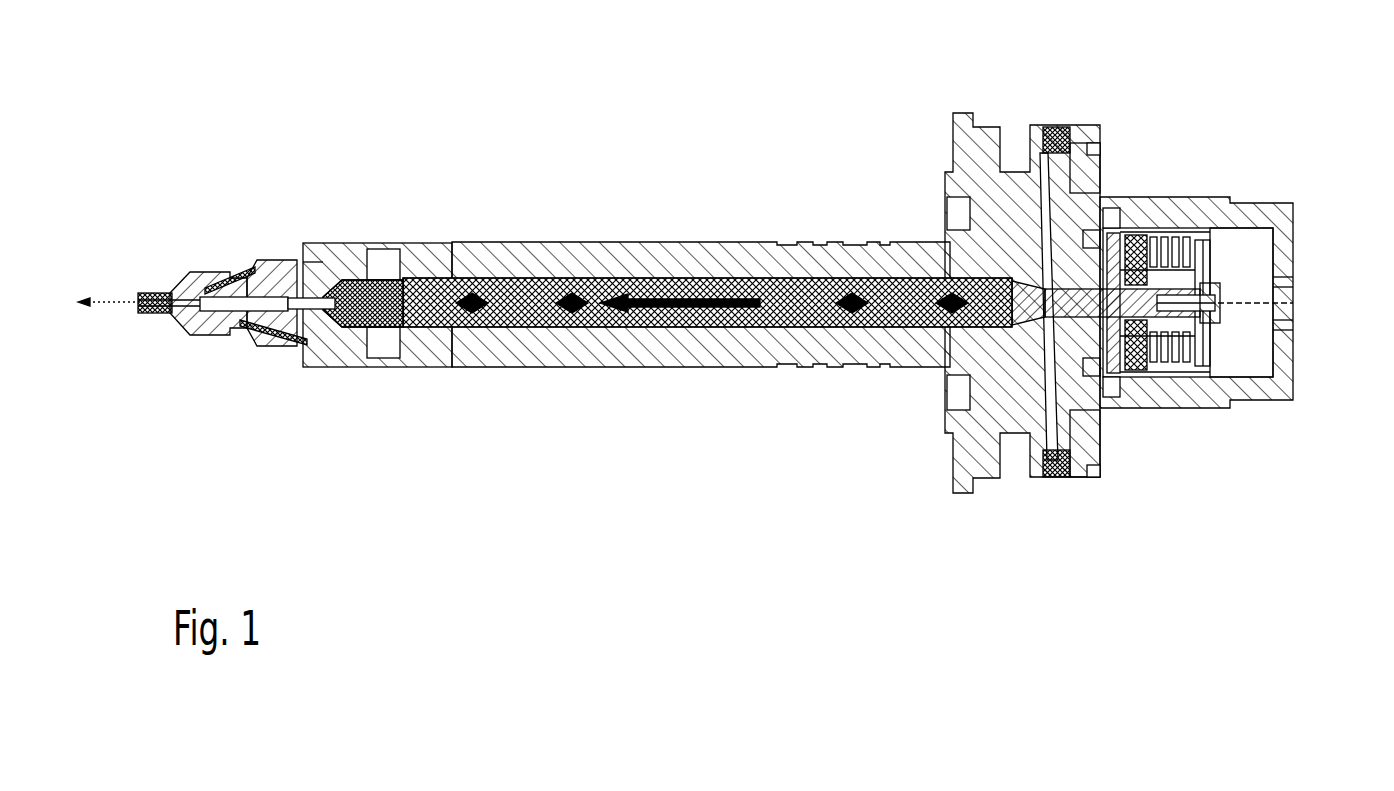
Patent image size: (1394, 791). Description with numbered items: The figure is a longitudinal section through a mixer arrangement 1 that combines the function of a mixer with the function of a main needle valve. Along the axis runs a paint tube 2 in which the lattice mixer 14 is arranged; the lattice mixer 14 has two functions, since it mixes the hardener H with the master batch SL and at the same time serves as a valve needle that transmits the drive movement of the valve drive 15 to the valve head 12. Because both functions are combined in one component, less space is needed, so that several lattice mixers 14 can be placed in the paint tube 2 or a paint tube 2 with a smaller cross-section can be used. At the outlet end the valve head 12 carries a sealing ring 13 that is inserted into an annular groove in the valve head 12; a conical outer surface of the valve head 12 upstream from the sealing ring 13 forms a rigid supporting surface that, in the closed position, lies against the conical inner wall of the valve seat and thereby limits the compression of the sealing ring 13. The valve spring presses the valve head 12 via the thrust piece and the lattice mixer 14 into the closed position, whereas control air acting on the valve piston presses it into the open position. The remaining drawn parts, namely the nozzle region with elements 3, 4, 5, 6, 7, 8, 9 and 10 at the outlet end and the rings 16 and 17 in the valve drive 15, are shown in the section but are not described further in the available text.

The dispensing device 1 is at (759, 121).
The paint tube 2 is at (592, 255).
The nozzle holder block 3 is at (338, 362).
The nozzle body 4 is at (200, 330).
The valve needle 5 is at (305, 297).
The nozzle tip 6 is at (150, 292).
The dispensing direction 7 is at (108, 300).
The lower pin 8 is at (292, 347).
The sealing cone 9 is at (222, 285).
The upper pin 10 is at (198, 270).
The valve head 12 is at (383, 290).
The sealing ring 13 is at (330, 270).
The lattice mixer 14 is at (808, 318).
The valve drive 15 is at (1310, 309).
The upper bearing ring 16 is at (1103, 157).
The lower bearing ring 17 is at (1103, 450).
The hardener H is at (1114, 167).
The master batch SL is at (1114, 438).